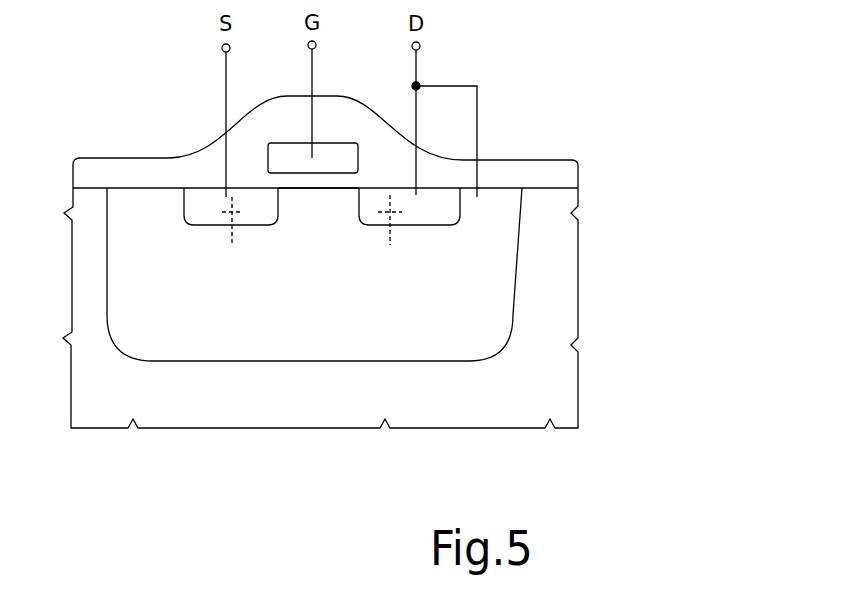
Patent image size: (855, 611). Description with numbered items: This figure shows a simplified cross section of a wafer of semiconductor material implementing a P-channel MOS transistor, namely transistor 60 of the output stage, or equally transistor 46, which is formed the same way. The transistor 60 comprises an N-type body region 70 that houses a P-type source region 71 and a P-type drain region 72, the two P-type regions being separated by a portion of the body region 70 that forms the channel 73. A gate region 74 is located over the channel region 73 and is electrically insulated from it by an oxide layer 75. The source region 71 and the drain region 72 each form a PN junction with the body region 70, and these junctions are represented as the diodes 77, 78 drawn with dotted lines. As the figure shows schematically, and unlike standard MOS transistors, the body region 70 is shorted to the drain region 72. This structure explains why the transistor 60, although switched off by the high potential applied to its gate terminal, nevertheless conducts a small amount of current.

The transistor 46 is at (400, 288).
The transistor 60 is at (603, 191).
The N-type body region 70 is at (484, 343).
The P-type source region 71 is at (258, 212).
The P-type drain region 72 is at (428, 212).
The channel 73 is at (317, 195).
The gate region 74 is at (337, 153).
The oxide layer 75 is at (185, 173).
The diode 77 is at (230, 220).
The diode 78 is at (395, 222).